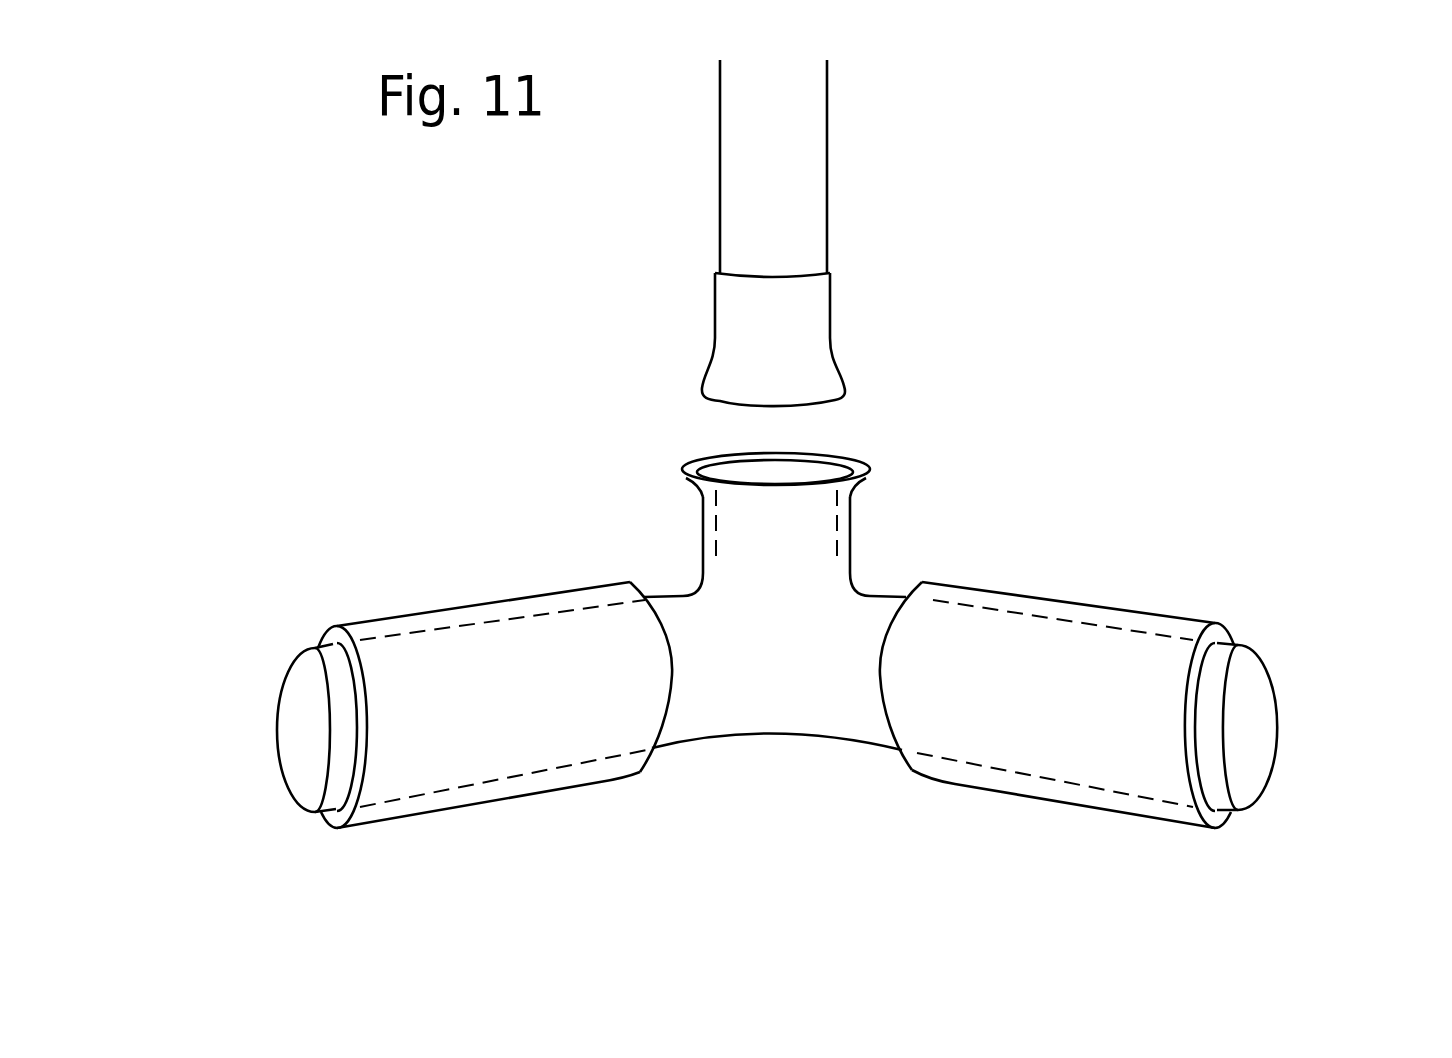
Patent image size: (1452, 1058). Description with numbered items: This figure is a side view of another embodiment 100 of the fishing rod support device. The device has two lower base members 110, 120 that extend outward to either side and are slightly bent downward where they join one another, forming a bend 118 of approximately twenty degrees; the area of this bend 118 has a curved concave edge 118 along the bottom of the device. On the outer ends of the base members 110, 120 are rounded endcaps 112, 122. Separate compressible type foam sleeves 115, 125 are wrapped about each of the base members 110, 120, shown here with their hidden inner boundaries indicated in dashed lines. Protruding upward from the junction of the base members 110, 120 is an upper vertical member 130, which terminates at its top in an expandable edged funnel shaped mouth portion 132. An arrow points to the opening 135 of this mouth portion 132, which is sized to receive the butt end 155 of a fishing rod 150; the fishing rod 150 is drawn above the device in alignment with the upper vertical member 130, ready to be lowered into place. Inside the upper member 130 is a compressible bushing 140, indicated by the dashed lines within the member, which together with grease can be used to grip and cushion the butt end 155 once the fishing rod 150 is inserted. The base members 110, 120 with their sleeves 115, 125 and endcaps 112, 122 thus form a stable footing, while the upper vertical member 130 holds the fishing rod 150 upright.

The fishing rod support device embodiment 100 is at (553, 383).
The lower base member 110 is at (467, 652).
The rounded endcap 112 is at (297, 745).
The compressible foam sleeve 115 is at (490, 797).
The bend 118 is at (767, 738).
The lower base member 120 is at (1083, 643).
The rounded endcap 122 is at (1250, 710).
The compressible foam sleeve 125 is at (1028, 790).
The upper vertical member 130 is at (853, 535).
The expandable edged funnel shaped mouth portion 132 is at (865, 474).
The opening 135 is at (821, 465).
The compressible bushing 140 is at (839, 554).
The fishing rod 150 is at (795, 222).
The butt end 155 is at (816, 339).